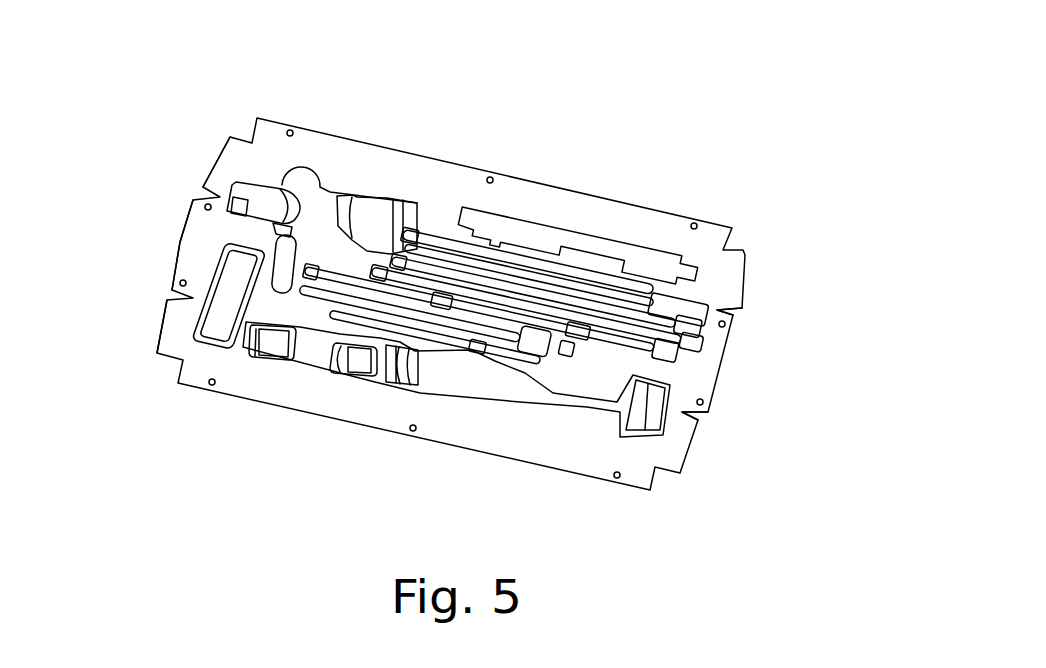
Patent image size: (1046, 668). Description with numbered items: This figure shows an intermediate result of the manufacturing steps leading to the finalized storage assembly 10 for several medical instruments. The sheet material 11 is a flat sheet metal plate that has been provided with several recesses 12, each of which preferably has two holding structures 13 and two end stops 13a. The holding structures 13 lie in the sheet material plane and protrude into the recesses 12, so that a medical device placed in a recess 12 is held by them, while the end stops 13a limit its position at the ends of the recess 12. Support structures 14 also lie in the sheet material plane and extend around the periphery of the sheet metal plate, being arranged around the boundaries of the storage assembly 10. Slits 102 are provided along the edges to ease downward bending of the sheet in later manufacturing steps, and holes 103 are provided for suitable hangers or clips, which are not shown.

The storage assembly 10 is at (695, 81).
The sheet material 11 is at (263, 150).
The recess 12 is at (311, 197).
The holding structure 13 is at (335, 208).
The end stop 13a is at (253, 342).
The support structure 14 is at (220, 153).
The slit 102 is at (742, 308).
The hole 103 is at (492, 178).